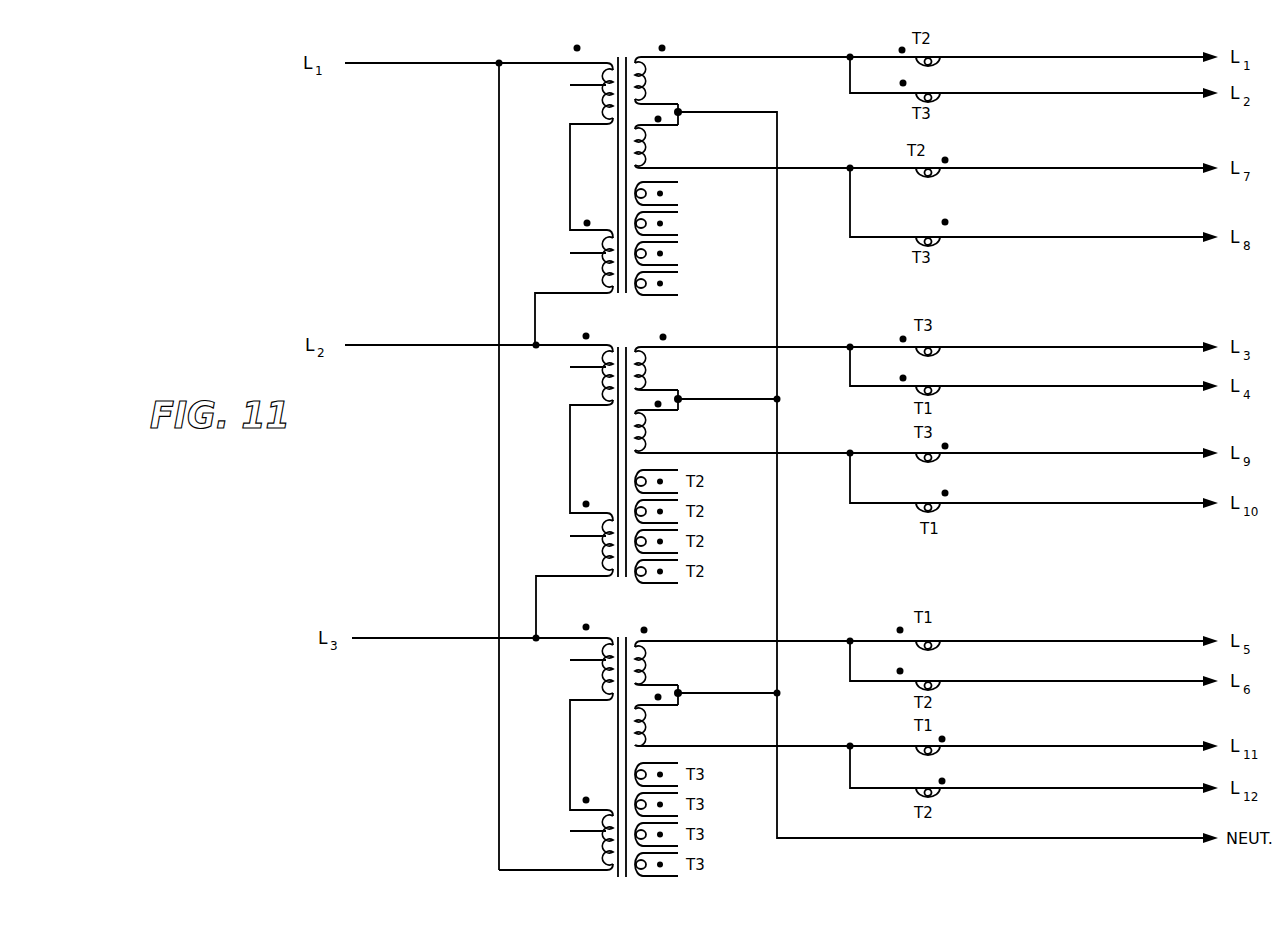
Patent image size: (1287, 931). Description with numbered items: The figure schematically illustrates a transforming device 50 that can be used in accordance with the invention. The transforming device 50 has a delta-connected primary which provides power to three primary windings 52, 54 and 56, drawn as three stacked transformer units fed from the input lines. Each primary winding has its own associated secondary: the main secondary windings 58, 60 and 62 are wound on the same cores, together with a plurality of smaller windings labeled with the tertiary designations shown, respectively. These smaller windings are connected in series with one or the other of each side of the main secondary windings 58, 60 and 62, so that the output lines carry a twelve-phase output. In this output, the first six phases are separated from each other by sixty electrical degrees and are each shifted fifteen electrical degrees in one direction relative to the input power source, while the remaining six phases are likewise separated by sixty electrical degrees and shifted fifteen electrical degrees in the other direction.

The transforming device 50 is at (705, 50).
The primary winding 52 is at (468, 183).
The primary winding 54 is at (462, 422).
The primary winding 56 is at (490, 755).
The main secondary winding 58 is at (712, 102).
The main secondary winding 60 is at (695, 392).
The main secondary winding 62 is at (697, 682).